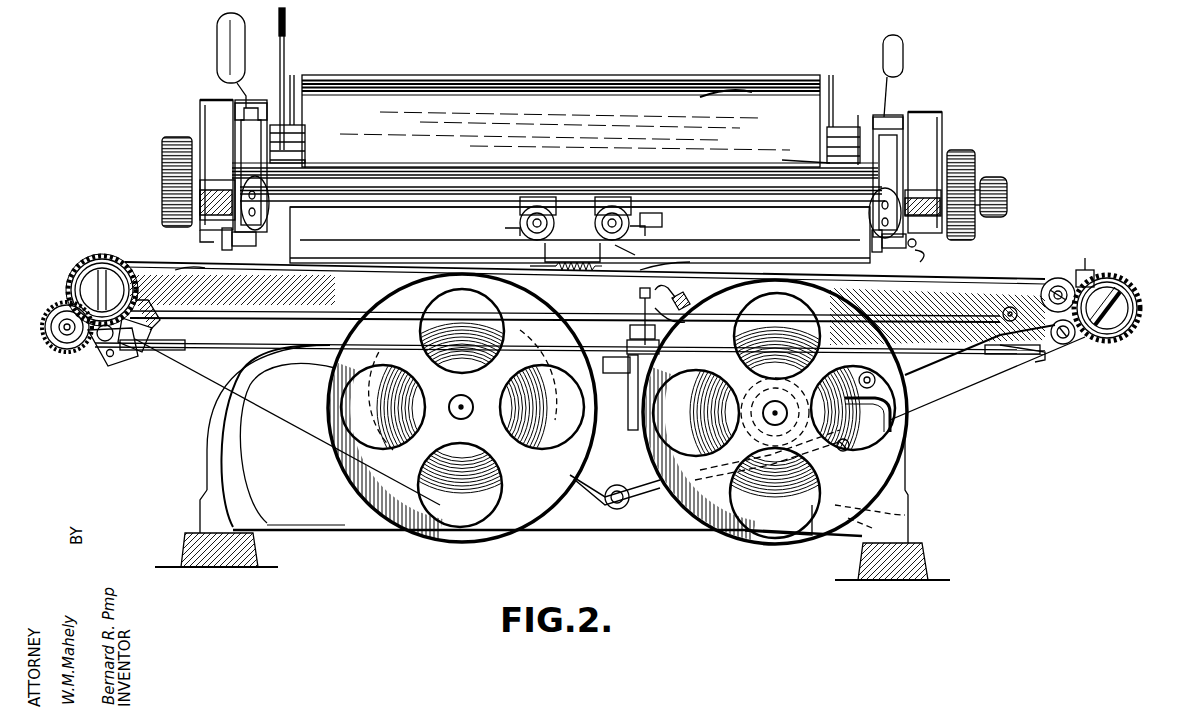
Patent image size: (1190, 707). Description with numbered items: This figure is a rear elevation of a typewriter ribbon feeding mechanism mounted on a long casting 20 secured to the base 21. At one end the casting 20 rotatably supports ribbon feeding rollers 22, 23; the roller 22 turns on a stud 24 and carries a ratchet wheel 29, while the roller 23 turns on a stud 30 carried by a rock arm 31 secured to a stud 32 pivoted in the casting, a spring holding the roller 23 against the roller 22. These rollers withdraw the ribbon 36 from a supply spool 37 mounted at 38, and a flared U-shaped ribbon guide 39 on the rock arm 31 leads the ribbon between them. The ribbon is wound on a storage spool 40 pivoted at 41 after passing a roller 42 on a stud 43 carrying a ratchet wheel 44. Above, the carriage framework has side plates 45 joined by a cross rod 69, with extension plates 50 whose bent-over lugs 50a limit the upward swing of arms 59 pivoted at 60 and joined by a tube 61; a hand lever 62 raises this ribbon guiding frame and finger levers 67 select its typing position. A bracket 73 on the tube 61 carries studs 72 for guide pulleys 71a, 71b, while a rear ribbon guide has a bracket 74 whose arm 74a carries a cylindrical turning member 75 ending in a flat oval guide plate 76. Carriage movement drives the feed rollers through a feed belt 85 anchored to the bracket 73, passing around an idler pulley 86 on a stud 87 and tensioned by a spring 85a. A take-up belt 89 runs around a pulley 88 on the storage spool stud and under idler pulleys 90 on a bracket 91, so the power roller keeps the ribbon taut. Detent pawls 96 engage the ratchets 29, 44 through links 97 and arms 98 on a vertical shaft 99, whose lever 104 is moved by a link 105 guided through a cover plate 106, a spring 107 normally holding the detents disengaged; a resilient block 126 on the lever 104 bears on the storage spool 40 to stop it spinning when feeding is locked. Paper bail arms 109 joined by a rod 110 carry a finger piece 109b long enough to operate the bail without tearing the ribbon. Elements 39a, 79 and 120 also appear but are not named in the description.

The casting 20 is at (250, 320).
The base 21 is at (908, 480).
The ribbon feeding roller 22 is at (86, 268).
The ribbon feeding roller 23 is at (50, 316).
The stud 24 is at (110, 285).
The ratchet wheel 29 is at (98, 255).
The stud 30 is at (62, 330).
The rock arm 31 is at (92, 360).
The stud 32 is at (113, 356).
The ribbon 36 is at (215, 113).
The ribbon supply spool 37 is at (512, 520).
The spool mounting 38 is at (455, 418).
The ribbon guide 39 is at (150, 335).
The lever arm 39a is at (1085, 258).
The storage spool 40 is at (812, 535).
The pivot 41 is at (776, 425).
The roller 42 is at (1140, 308).
The stud 43 is at (1128, 292).
The ratchet wheel 44 is at (1092, 270).
The side plates 45 is at (296, 158).
The extension plates 50 is at (300, 140).
The bent-over lugs 50a is at (253, 106).
The arms 59 is at (240, 131).
The pivots 60 is at (225, 240).
The tube 61 is at (393, 186).
The hand lever 62 is at (240, 33).
The finger levers 67 is at (208, 268).
The cross rod 69 is at (443, 166).
The guide roller 71a is at (506, 222).
The guide roller 71b is at (600, 200).
The studs 72 is at (540, 222).
The bracket 73 is at (630, 253).
The bracket 74 is at (178, 159).
The downwardly extending arm 74a is at (205, 236).
The ribbon turning member 75 is at (205, 208).
The guide plate 76 is at (268, 193).
The plate 79 is at (203, 99).
The feed belt 85 is at (385, 268).
The spring 85a is at (566, 249).
The idler pulley 86 is at (1052, 280).
The stud 87 is at (1058, 291).
The pulley 88 is at (770, 457).
The feed belt 89 is at (892, 428).
The idler pulleys 90 is at (878, 395).
The bracket 91 is at (850, 445).
The detent pawls 96 is at (1070, 342).
The links 97 is at (222, 348).
The arms 98 is at (626, 335).
The vertical shaft 99 is at (640, 300).
The lever 104 is at (664, 287).
The link 105 is at (679, 260).
The cover plate 106 is at (686, 322).
The spring 107 is at (1032, 348).
The arms 109 is at (290, 127).
The finger piece 109b is at (286, 44).
The rod 110 is at (294, 100).
The stop 120 is at (672, 230).
The block 126 is at (692, 300).